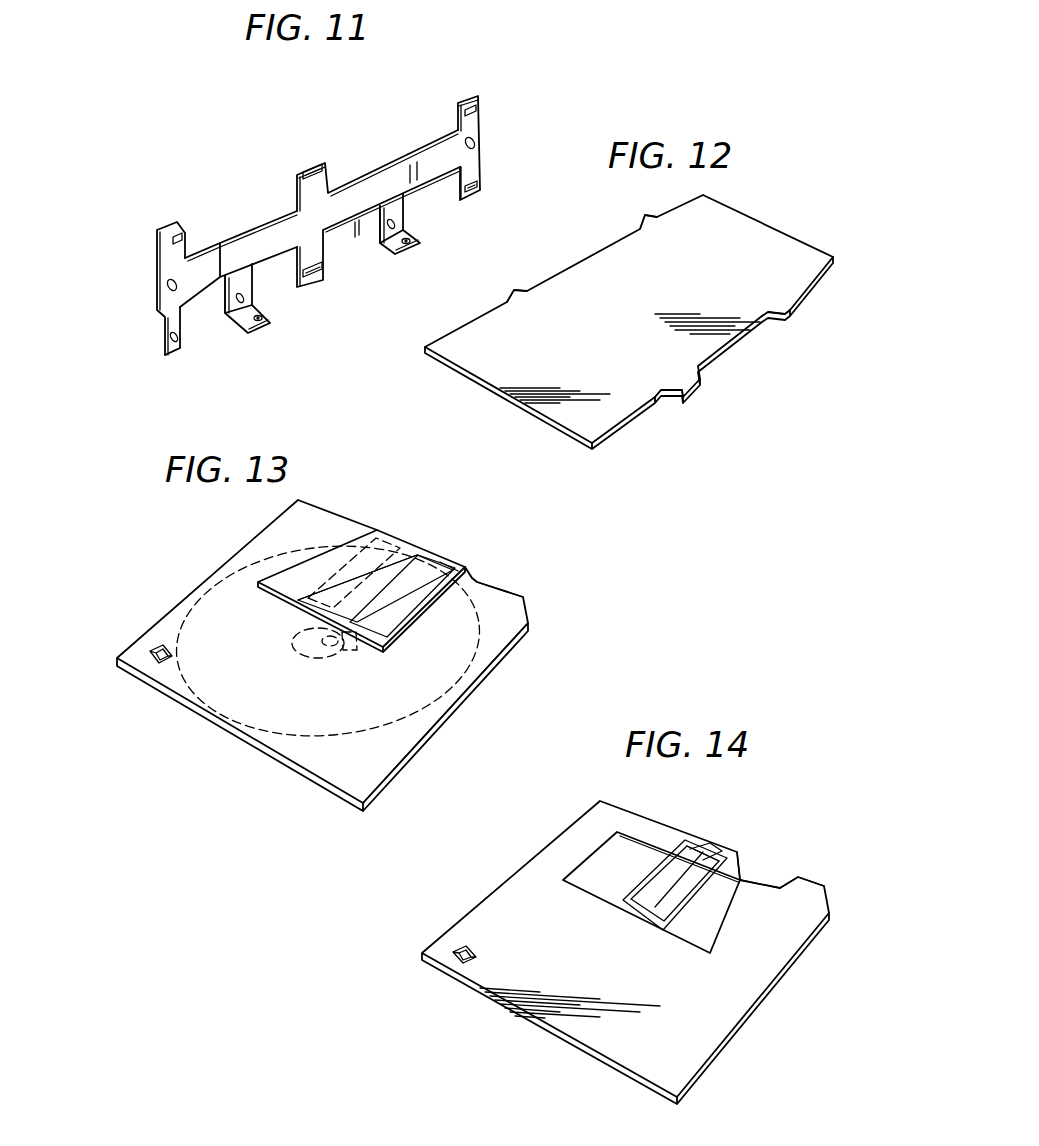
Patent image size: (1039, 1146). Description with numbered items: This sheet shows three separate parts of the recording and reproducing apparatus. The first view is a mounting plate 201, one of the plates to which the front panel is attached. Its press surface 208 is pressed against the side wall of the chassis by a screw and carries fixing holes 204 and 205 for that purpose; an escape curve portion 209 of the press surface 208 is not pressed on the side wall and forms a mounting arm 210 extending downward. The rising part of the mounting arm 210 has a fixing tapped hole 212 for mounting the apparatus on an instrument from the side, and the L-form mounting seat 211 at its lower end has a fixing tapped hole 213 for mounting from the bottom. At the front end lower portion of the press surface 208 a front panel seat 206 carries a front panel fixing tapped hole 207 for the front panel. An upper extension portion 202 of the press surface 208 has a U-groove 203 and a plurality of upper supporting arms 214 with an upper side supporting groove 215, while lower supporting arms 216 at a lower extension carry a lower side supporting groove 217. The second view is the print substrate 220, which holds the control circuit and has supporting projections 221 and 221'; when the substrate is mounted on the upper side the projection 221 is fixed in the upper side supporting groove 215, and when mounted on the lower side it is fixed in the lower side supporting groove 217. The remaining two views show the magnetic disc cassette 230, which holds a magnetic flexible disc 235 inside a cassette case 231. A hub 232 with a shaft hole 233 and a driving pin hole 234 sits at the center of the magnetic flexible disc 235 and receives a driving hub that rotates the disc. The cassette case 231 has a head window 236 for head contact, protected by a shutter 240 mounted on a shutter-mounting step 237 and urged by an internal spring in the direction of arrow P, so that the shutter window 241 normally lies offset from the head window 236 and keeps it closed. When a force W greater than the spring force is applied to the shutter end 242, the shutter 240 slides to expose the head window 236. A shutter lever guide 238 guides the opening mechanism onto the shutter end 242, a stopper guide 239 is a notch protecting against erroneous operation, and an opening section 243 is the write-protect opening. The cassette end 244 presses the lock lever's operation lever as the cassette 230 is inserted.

In FIG. 11, the mounting plate 201 is at (281, 212).
In FIG. 11, the upper extension portion 202 is at (157, 232).
In FIG. 11, the U-groove 203 is at (176, 235).
In FIG. 11, the fixing hole 204 is at (170, 283).
In FIG. 11, the fixing hole 205 is at (474, 143).
In FIG. 11, the front panel seat 206 is at (178, 350).
In FIG. 11, the front panel fixing tapped hole 207 is at (175, 343).
In FIG. 11, the press surface 208 is at (197, 268).
In FIG. 11, the escape curve portion 209 is at (236, 232).
In FIG. 11, the mounting arm 210 is at (256, 290).
In FIG. 11, the L-form mounting seat 211 is at (268, 326).
In FIG. 11, the fixing tapped hole 212 is at (223, 300).
In FIG. 11, the fixing tapped hole 213 is at (247, 328).
In FIG. 11, the upper supporting arm 214 is at (317, 169).
In FIG. 11, the upper side supporting groove 215 is at (305, 168).
In FIG. 11, the lower supporting arm 216 is at (322, 275).
In FIG. 11, the lower side supporting groove 217 is at (318, 283).
In FIG. 12, the print substrate 220 is at (500, 392).
In FIG. 12, the supporting projection 221 is at (592, 355).
In FIG. 12, the supporting projection 221' is at (706, 277).
In FIG. 13, the magnetic disc cassette 230 is at (320, 787).
In FIG. 14, the magnetic disc cassette 230 is at (556, 1043).
In FIG. 13, the cassette case 231 is at (478, 682).
In FIG. 13, the hub 232 is at (322, 640).
In FIG. 13, the shaft hole 233 is at (293, 645).
In FIG. 13, the driving pin hole 234 is at (350, 652).
In FIG. 13, the magnetic flexible disc 235 is at (400, 722).
In FIG. 14, the magnetic flexible disc 235 is at (680, 882).
In FIG. 13, the head window 236 is at (405, 546).
In FIG. 14, the head window 236 is at (720, 855).
In FIG. 13, the shutter-mounting step 237 is at (318, 525).
In FIG. 13, the shutter lever guide 238 is at (478, 582).
In FIG. 14, the shutter lever guide 238 is at (805, 882).
In FIG. 14, the stopper guide 239 is at (760, 860).
In FIG. 13, the shutter 240 is at (398, 538).
In FIG. 14, the shutter 240 is at (645, 812).
In FIG. 13, the shutter window 241 is at (447, 563).
In FIG. 14, the shutter window 241 is at (690, 850).
In FIG. 13, the shutter end 242 is at (462, 565).
In FIG. 14, the shutter end 242 is at (745, 858).
In FIG. 13, the opening section 243 is at (160, 647).
In FIG. 14, the opening section 243 is at (470, 945).
In FIG. 14, the cassette end 244 is at (792, 880).